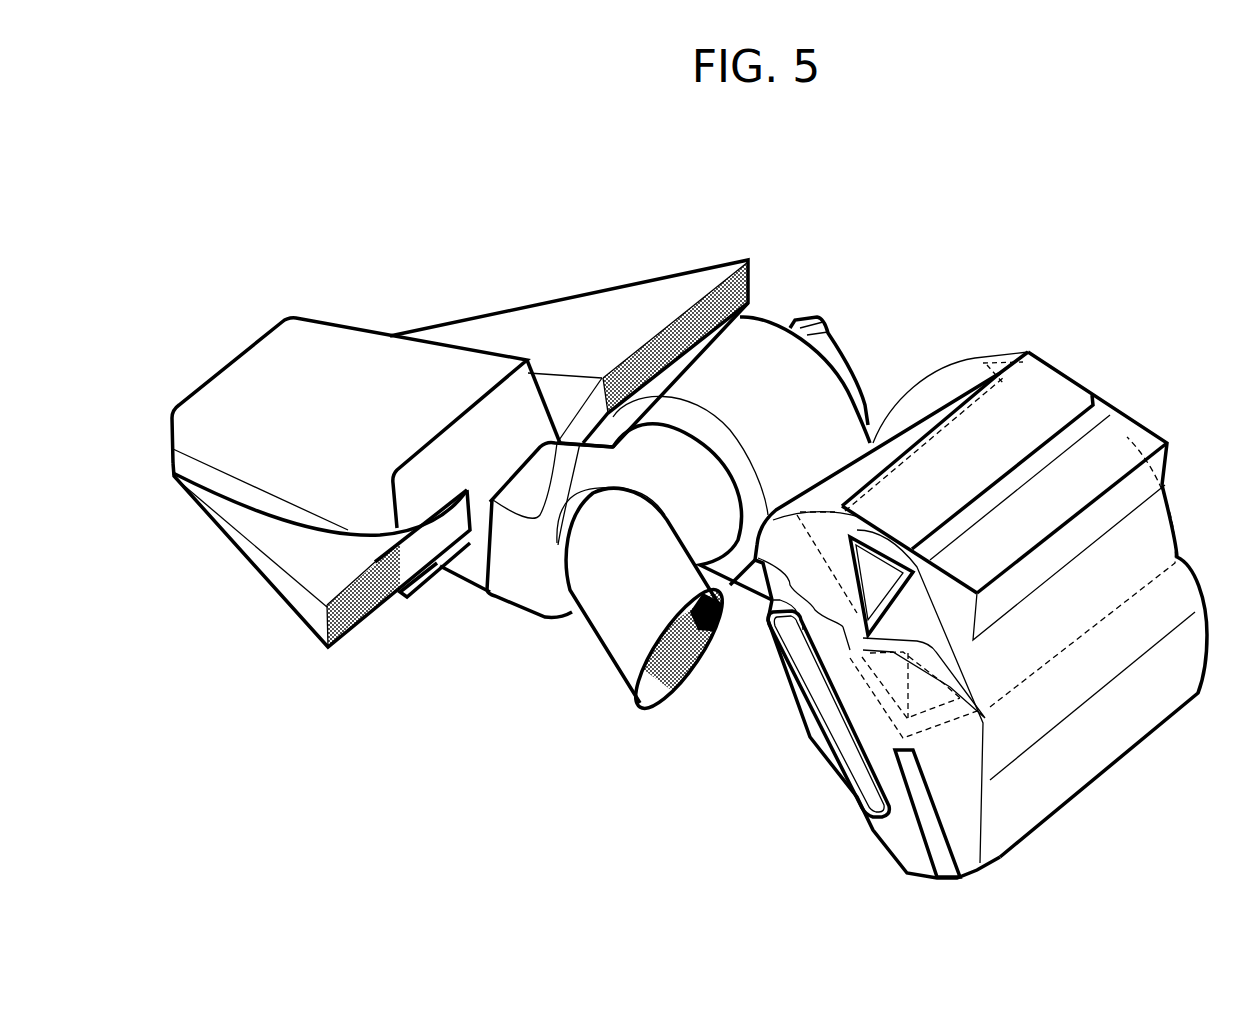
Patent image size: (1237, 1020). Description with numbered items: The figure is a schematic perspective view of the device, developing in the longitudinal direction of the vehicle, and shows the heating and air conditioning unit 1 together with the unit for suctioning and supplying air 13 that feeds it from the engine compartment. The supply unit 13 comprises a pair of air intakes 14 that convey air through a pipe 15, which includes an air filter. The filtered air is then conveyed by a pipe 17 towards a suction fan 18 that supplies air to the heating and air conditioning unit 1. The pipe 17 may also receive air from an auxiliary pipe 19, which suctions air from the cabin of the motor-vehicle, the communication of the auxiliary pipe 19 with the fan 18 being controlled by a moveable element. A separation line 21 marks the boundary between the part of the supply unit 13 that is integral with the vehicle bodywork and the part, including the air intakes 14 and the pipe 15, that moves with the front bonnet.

The heating and air conditioning unit 1 is at (1162, 411).
The unit for suctioning and supplying air 13 is at (774, 268).
The air intakes 14 is at (605, 306).
The pipe 15 is at (308, 337).
The pipe 17 is at (548, 563).
The fan 18 is at (817, 382).
The auxiliary pipe 19 is at (673, 670).
The separation line 21 is at (451, 572).